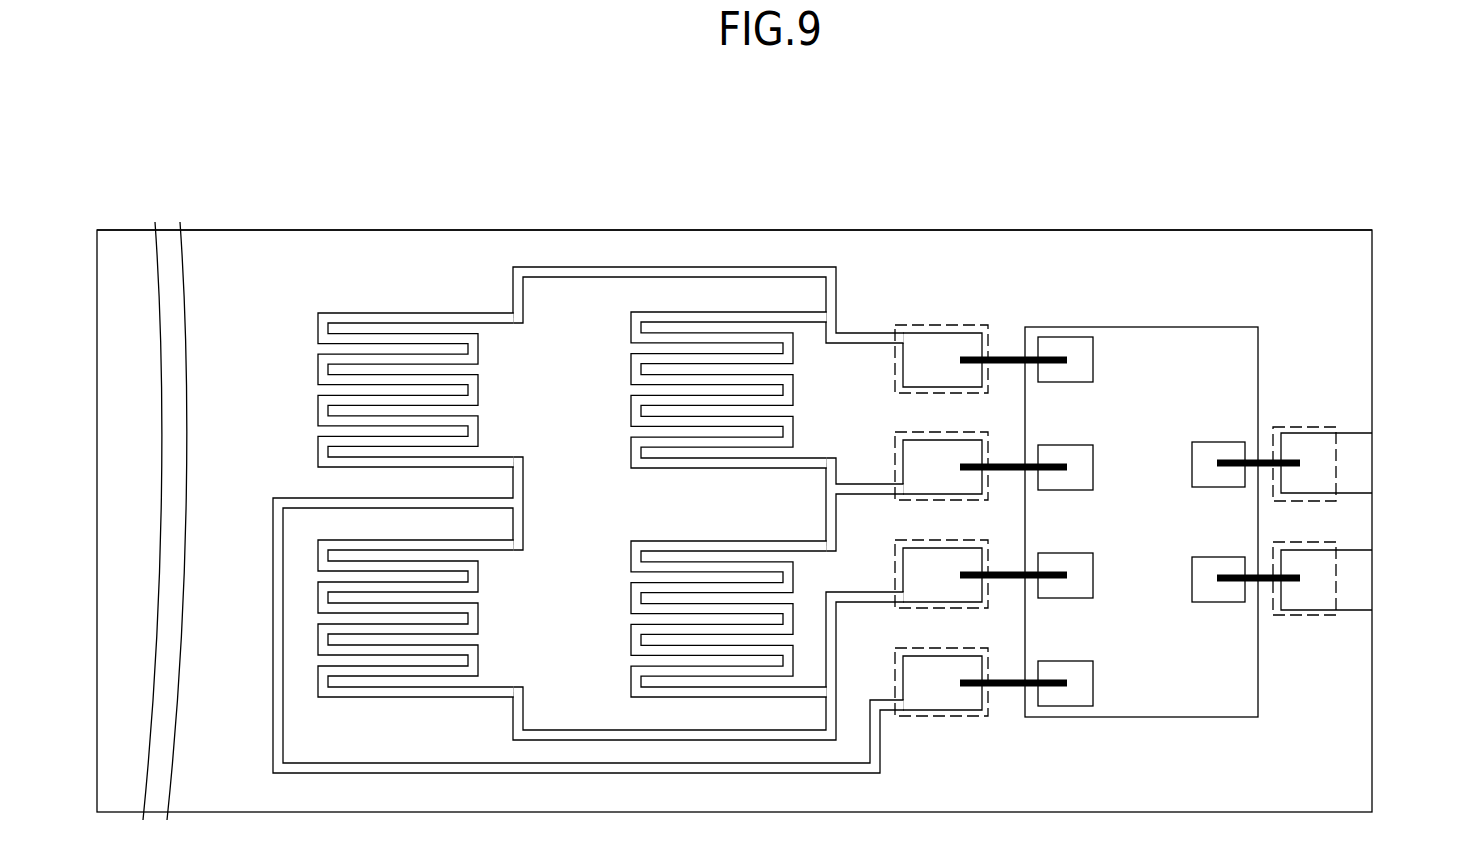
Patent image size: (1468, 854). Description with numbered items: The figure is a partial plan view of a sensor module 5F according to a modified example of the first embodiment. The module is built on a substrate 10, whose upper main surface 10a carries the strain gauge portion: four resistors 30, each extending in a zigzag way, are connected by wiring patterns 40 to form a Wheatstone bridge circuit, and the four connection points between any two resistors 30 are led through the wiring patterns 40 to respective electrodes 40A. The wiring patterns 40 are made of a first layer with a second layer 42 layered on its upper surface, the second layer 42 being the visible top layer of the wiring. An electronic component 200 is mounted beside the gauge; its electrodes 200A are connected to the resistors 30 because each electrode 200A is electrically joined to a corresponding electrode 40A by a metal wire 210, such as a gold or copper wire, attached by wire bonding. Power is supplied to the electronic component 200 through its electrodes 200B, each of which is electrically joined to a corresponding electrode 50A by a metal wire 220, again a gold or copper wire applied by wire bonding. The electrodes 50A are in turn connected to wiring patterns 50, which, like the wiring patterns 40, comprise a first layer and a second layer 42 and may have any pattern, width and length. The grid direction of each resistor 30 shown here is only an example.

The sensor module 5F is at (180, 134).
The substrate 10 is at (128, 224).
The main surface of substrate 10a is at (430, 246).
The resistor 30 is at (418, 311).
The wiring pattern 40 is at (857, 470).
The electrode 40A is at (953, 325).
The second layer 42 is at (616, 272).
The wiring pattern 50 is at (1364, 495).
The electrode 50A is at (1320, 428).
The electronic component 200 is at (1141, 444).
The electrode 200A is at (1068, 340).
The electrode 200B is at (1213, 447).
The metal wire 210 is at (1007, 356).
The metal wire 220 is at (1272, 460).